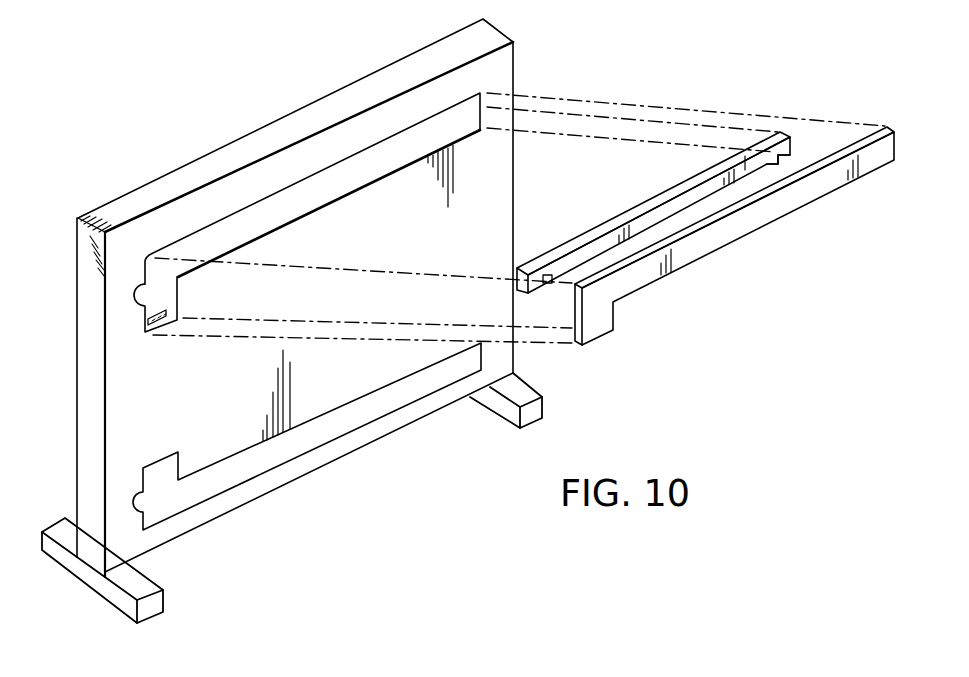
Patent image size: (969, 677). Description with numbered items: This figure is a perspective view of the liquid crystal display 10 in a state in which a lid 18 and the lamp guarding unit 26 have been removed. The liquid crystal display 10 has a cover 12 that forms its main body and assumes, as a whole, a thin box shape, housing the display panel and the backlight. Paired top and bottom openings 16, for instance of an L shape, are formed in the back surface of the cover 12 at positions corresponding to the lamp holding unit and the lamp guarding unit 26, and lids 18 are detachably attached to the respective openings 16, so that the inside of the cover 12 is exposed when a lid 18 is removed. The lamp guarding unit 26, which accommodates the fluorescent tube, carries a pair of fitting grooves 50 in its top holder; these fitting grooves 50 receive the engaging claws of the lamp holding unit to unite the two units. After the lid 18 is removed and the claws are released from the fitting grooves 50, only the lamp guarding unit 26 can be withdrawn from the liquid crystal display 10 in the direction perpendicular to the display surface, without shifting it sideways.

The liquid crystal display 10 is at (197, 143).
The cover 12 is at (85, 378).
The opening 16 is at (296, 183).
The lid 18 is at (328, 433).
The lamp guarding unit 26 is at (598, 222).
The fitting groove 50 is at (774, 164).